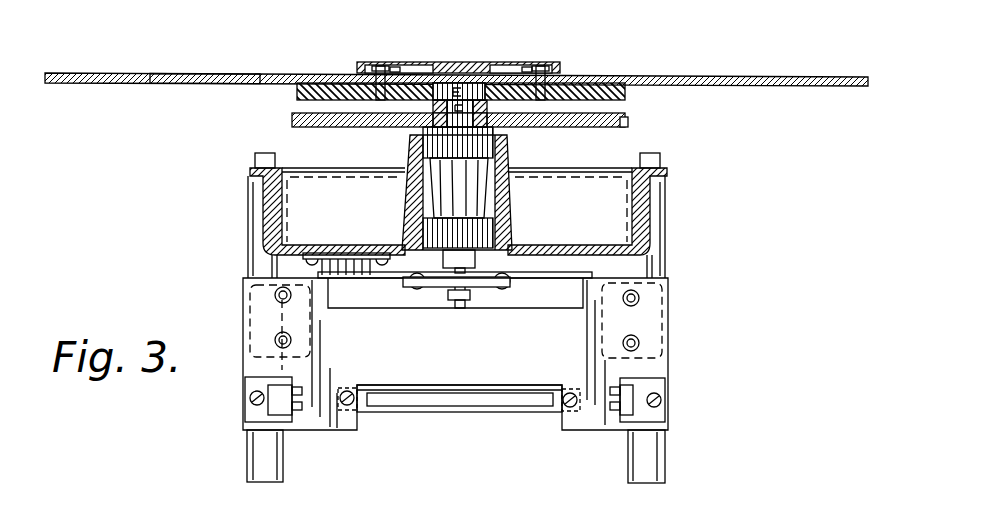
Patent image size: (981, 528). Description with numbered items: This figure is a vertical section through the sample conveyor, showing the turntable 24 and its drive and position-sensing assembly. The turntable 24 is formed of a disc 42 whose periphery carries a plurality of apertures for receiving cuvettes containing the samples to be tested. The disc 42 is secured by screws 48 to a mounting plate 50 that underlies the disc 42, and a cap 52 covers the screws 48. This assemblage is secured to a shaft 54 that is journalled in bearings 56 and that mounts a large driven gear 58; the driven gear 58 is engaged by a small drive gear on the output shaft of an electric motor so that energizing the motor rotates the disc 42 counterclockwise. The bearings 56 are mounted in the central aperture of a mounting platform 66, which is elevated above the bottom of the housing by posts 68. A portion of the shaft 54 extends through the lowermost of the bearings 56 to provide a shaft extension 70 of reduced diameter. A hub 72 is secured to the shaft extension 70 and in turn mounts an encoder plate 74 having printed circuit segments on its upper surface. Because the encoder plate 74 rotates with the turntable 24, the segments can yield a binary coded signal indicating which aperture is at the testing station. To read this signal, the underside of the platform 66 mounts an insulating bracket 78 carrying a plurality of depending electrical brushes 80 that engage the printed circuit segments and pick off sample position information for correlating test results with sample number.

The turntable 24 is at (100, 74).
The disc 42 is at (195, 73).
The screws 48 is at (380, 72).
The mounting plate 50 is at (622, 80).
The cap 52 is at (485, 62).
The shaft 54 is at (458, 127).
The bearings 56 is at (482, 143).
The driven gear 58 is at (627, 112).
The mounting platform 66 is at (657, 170).
The posts 68 is at (657, 240).
The shaft extension 70 is at (459, 304).
The hub 72 is at (430, 283).
The encoder plate 74 is at (564, 279).
The insulating bracket 78 is at (303, 259).
The electrical brushes 80 is at (350, 276).